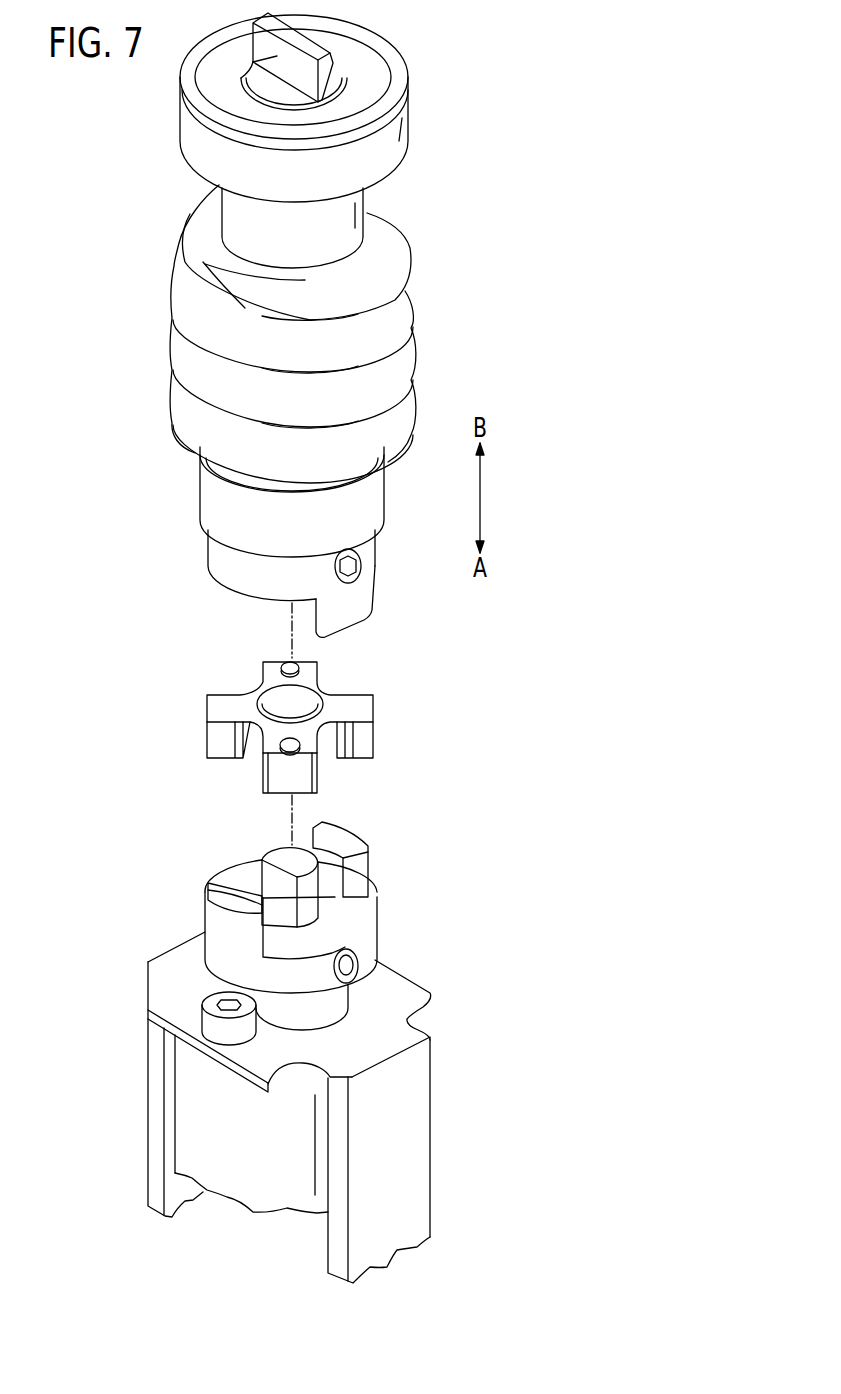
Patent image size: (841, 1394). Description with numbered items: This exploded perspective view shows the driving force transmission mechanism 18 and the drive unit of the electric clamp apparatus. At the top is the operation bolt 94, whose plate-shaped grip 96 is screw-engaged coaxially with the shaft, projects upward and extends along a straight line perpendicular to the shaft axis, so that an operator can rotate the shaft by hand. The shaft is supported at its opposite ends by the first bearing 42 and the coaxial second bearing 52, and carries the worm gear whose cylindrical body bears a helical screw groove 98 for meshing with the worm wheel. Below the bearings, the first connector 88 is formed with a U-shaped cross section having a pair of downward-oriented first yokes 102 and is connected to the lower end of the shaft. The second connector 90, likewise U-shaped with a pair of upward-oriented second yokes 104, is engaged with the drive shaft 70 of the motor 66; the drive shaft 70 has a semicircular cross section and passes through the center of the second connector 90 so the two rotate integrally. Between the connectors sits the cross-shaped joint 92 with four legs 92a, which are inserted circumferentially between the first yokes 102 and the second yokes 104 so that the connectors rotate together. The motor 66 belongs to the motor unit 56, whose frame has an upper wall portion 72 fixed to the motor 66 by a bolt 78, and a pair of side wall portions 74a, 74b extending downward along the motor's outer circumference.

The driving force transmission mechanism 18 is at (340, 334).
The first bearing 42 is at (396, 135).
The second bearing 52 is at (210, 492).
The motor unit 56 is at (305, 1107).
The motor 66 is at (243, 1188).
The drive shaft 70 is at (280, 855).
The upper wall portion 72 is at (397, 980).
The side wall portion 74a is at (400, 1175).
The side wall portion 74b is at (155, 1107).
The bolt 78 is at (197, 1000).
The first connector 88 is at (281, 594).
The second connector 90 is at (304, 895).
The joint 92 is at (336, 724).
The legs 92a is at (362, 714).
The operation bolt 94 is at (332, 39).
The grip 96 is at (277, 58).
The screw groove 98 is at (395, 250).
The first yokes 102 is at (353, 615).
The second yokes 104 is at (340, 840).